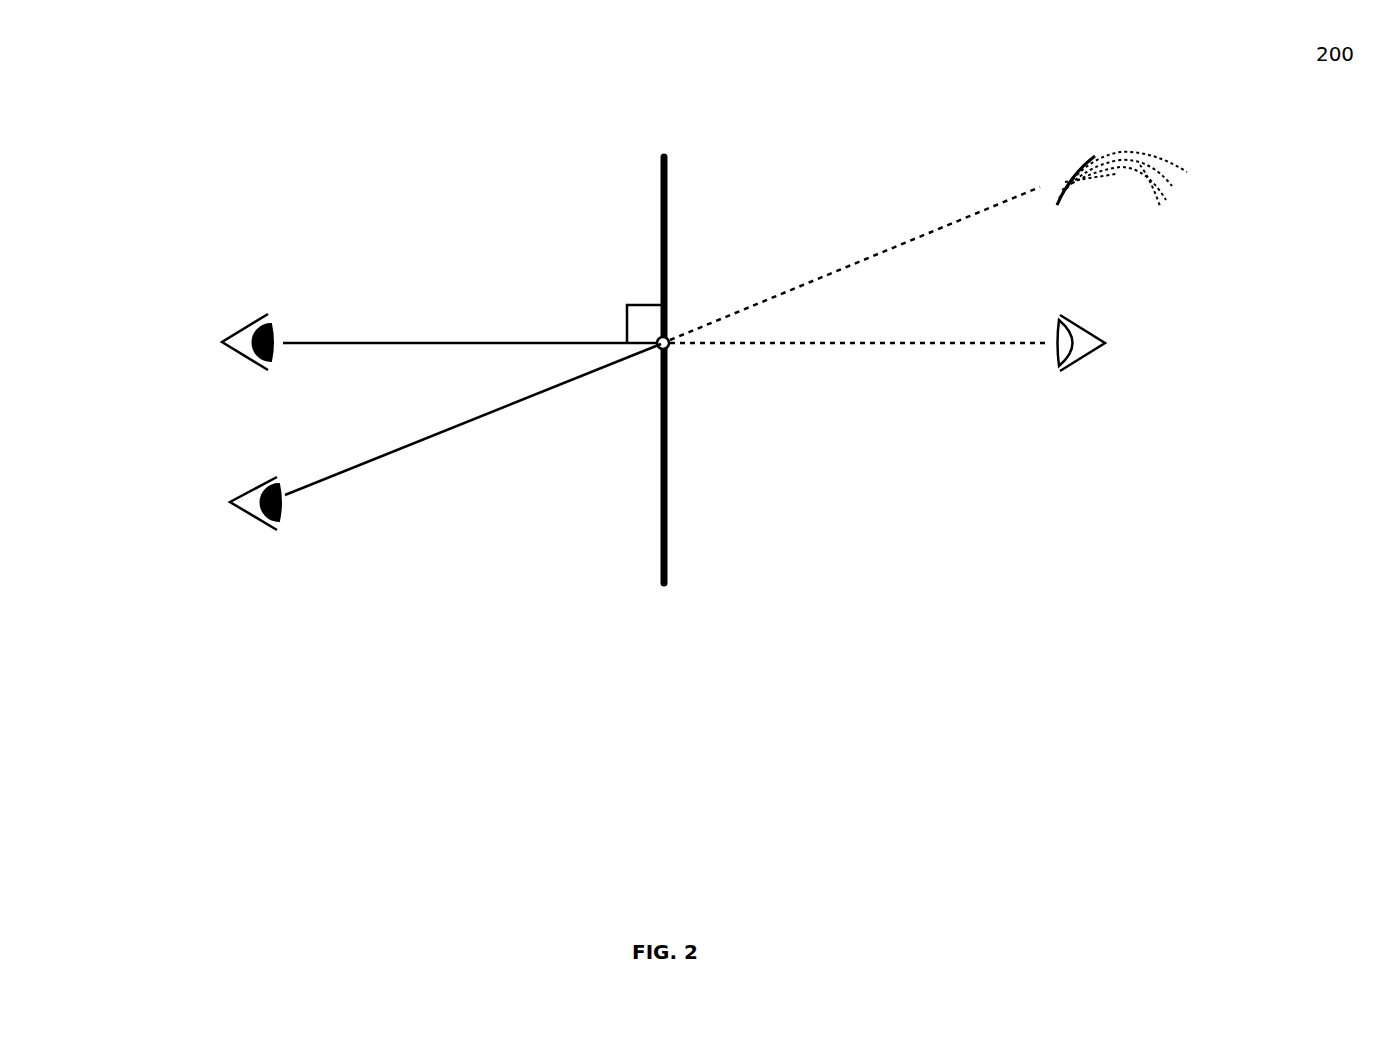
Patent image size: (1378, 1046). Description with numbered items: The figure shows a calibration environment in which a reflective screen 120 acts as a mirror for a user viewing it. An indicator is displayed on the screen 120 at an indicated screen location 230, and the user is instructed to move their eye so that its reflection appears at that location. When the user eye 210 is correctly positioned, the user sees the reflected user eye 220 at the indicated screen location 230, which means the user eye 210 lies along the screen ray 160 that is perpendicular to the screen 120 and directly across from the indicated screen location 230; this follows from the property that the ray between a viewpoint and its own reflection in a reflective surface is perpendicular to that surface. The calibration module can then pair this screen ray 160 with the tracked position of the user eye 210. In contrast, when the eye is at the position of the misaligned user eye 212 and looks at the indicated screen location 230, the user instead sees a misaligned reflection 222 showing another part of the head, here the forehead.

The screen 120 is at (656, 170).
The screen ray 160 is at (497, 341).
The user eye 210 is at (243, 315).
The misaligned user eye 212 is at (248, 478).
The reflected user eye 220 is at (1094, 374).
The misaligned reflection 222 is at (928, 211).
The indicated screen location 230 is at (669, 349).